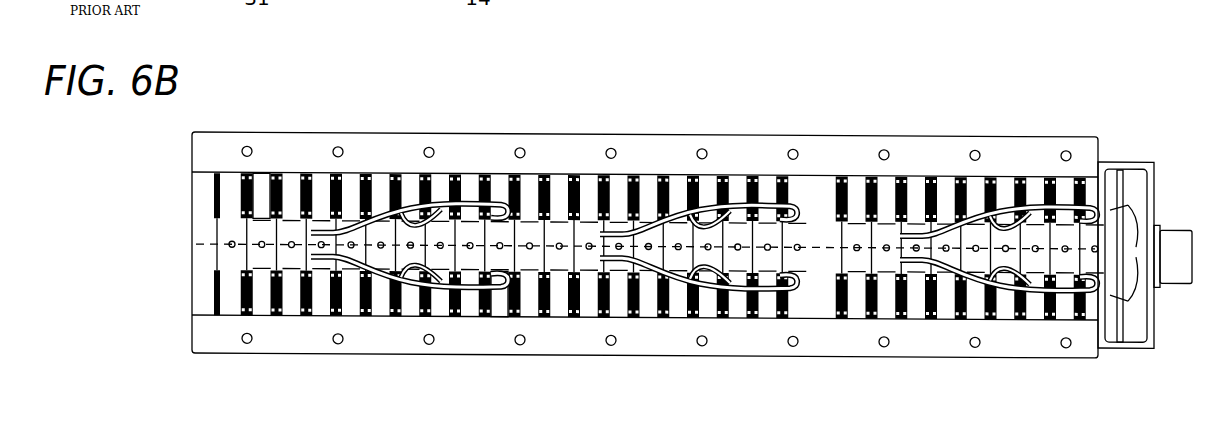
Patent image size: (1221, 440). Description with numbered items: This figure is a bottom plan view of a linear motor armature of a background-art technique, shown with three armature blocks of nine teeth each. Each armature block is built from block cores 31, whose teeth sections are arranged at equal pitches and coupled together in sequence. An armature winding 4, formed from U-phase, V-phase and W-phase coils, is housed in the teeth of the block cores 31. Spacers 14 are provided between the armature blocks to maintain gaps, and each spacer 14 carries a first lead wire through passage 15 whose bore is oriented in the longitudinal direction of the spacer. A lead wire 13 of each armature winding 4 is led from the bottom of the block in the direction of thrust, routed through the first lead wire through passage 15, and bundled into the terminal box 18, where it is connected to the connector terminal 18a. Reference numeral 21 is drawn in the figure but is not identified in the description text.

The armature winding 4 is at (316, 312).
The lead wire 13 is at (944, 290).
The spacer 14 is at (499, 186).
The first lead wire through passage 15 is at (508, 300).
The terminal box 18 is at (1157, 312).
The connector terminal 18a is at (1168, 222).
The cover plate 21 is at (1125, 330).
The block core 31 is at (263, 182).